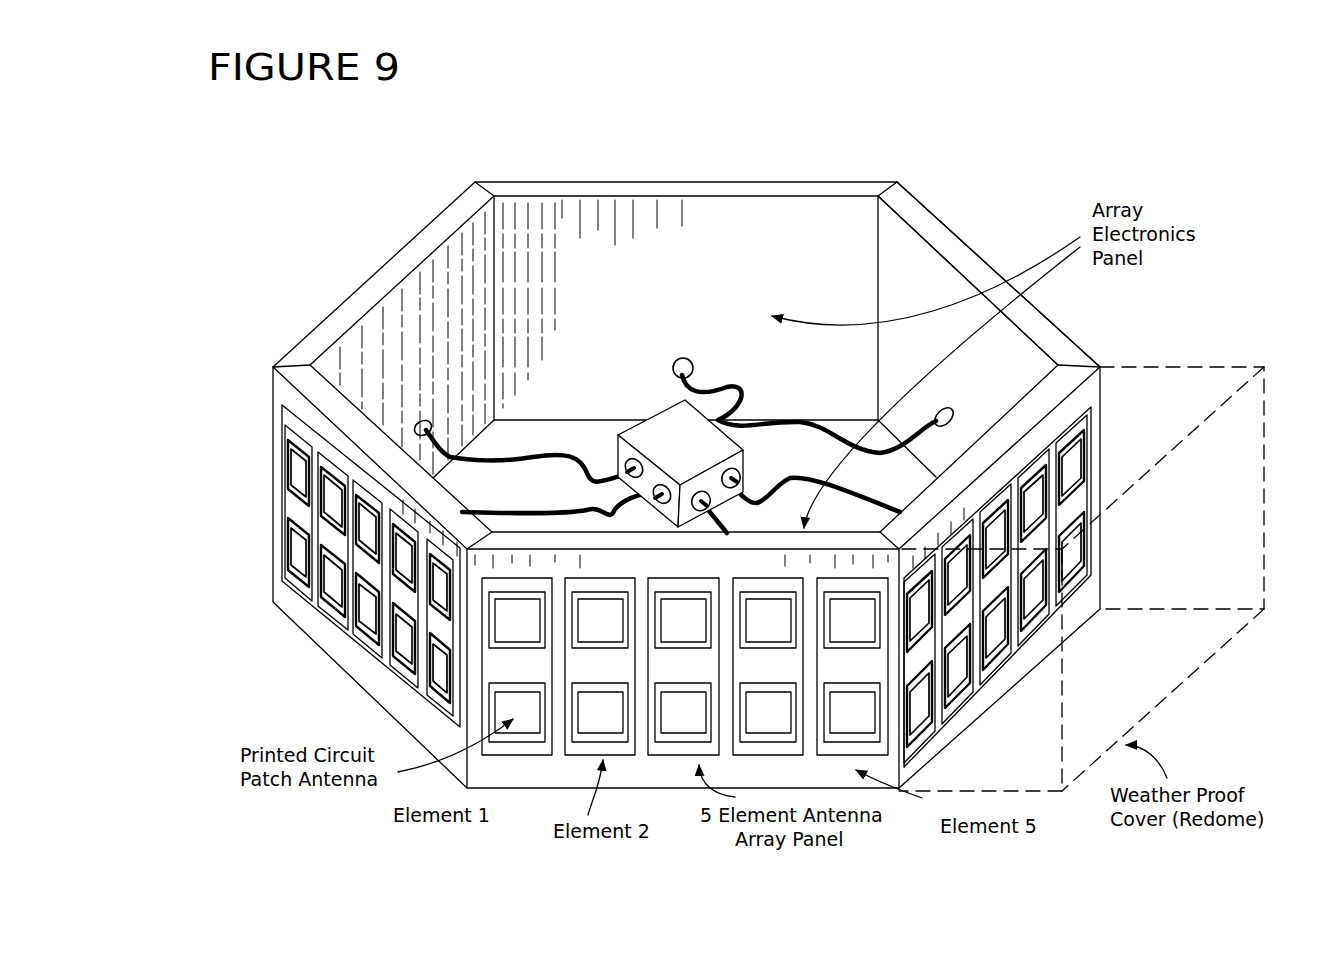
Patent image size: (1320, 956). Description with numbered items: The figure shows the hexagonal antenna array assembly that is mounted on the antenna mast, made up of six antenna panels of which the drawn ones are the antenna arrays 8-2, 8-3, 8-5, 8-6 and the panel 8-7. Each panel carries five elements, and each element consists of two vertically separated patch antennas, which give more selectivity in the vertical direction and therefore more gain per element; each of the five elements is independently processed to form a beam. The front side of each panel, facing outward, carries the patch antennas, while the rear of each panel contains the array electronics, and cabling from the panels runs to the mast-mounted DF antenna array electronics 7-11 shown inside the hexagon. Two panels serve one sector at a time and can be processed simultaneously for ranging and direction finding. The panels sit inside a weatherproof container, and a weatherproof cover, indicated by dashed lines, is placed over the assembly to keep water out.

The DF antenna array 7-11 is at (676, 443).
The antenna array 8-2 is at (547, 787).
The antenna array 8-3 is at (279, 614).
The antenna array 8-5 is at (797, 182).
The antenna array 8-6 is at (968, 262).
The right antenna array panel 8-7 is at (1074, 409).